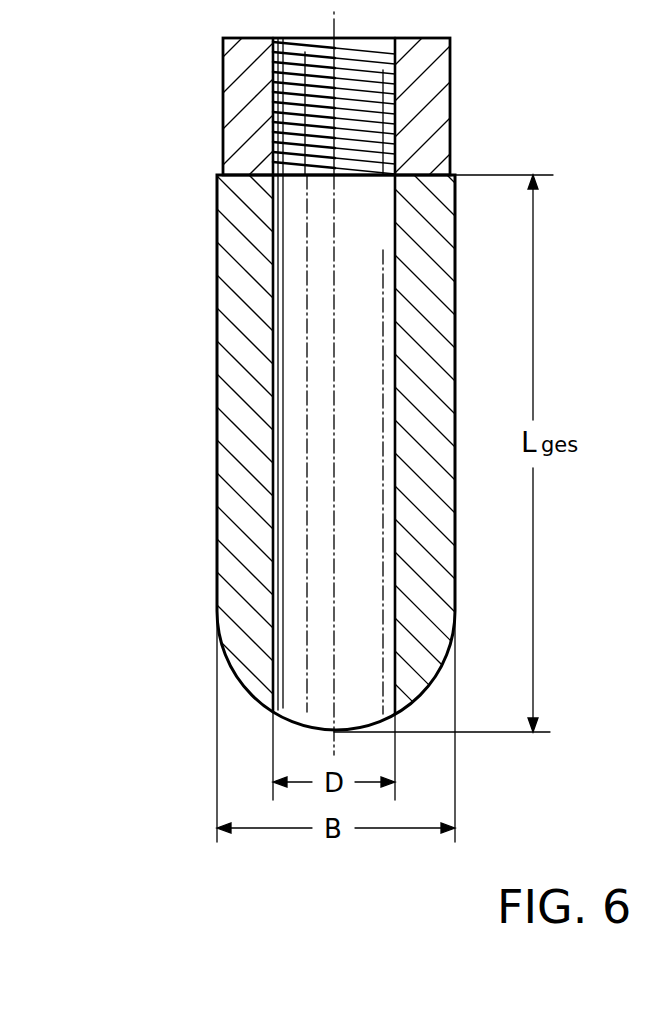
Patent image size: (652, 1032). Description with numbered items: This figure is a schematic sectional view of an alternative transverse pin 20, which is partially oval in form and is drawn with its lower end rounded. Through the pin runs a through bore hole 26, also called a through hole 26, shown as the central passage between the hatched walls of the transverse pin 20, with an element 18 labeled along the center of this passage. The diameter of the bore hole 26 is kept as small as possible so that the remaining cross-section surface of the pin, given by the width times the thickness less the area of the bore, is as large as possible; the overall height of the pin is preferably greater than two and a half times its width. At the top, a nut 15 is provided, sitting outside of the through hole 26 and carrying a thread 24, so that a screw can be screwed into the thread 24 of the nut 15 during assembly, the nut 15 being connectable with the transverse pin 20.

The nut 15 is at (418, 108).
The thread 24 is at (272, 110).
The transverse pin 20 is at (238, 372).
The through bore hole 26 is at (295, 493).
The central bore 18 is at (330, 578).